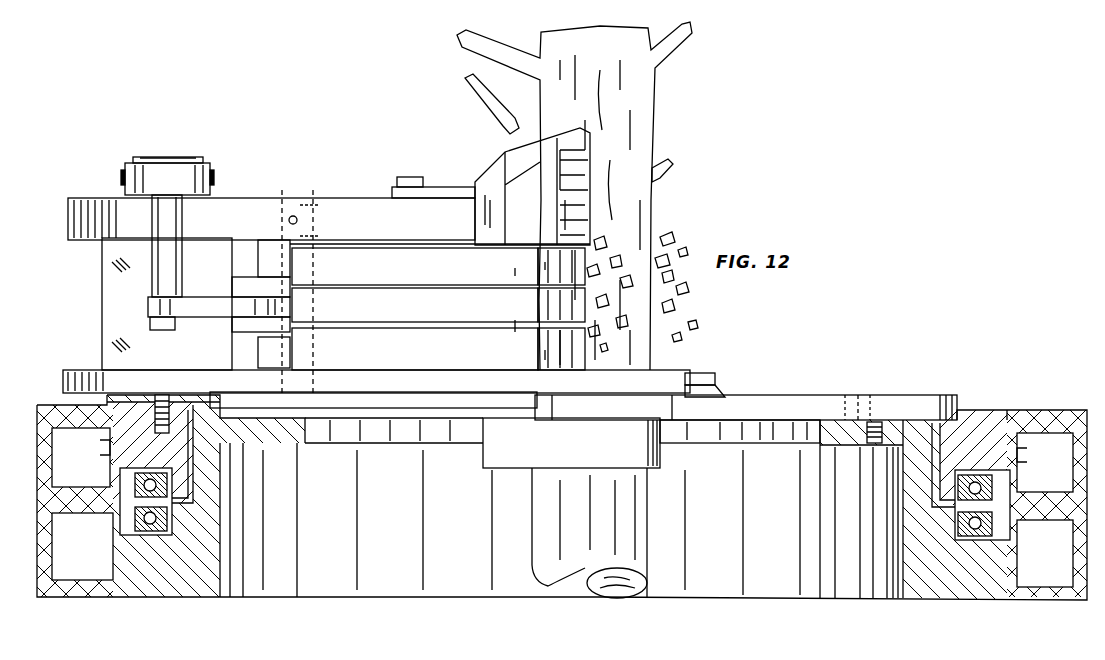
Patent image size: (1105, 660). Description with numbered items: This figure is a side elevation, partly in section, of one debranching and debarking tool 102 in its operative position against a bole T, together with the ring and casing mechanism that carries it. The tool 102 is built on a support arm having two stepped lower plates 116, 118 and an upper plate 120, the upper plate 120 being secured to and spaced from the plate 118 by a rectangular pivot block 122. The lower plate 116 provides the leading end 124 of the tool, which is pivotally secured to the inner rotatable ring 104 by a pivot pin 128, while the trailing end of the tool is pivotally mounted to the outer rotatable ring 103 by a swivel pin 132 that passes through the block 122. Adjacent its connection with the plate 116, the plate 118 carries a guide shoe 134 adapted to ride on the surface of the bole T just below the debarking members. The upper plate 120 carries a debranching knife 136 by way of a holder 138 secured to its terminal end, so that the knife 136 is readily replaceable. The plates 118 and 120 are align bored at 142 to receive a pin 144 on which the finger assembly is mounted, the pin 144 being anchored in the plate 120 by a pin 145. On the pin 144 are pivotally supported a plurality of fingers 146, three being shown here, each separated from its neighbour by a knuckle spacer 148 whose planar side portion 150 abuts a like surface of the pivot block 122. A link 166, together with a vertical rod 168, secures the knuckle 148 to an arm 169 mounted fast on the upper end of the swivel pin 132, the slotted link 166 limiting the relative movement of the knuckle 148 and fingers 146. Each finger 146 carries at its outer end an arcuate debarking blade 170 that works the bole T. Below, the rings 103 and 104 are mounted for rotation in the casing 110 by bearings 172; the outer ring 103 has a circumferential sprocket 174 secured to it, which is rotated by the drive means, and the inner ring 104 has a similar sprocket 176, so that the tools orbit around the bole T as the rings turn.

The debranching and debarking tool 102 is at (398, 152).
The outer rotatable ring 103 is at (198, 400).
The inner rotatable ring 104 is at (218, 532).
The casing 110 is at (50, 415).
The lower plate 116 is at (732, 400).
The lower plate 118 is at (470, 377).
The upper plate 120 is at (340, 198).
The pivot block 122 is at (104, 258).
The leading end 124 is at (917, 398).
The pivot pin 128 is at (856, 398).
The swivel pin 132 is at (158, 160).
The guide shoe 134 is at (662, 452).
The debranching knife 136 is at (532, 186).
The holder 138 is at (433, 177).
The aligned bore 142 is at (327, 234).
The pin 144 is at (318, 385).
The pin 145 is at (306, 216).
The finger 146 is at (262, 265).
The knuckle spacer 148 is at (240, 292).
The planar side portion 150 is at (232, 330).
The link 166 is at (225, 314).
The vertical rod 168 is at (152, 288).
The arm 169 is at (170, 162).
The debarking blade 170 is at (472, 270).
The bearing 172 is at (140, 485).
The sprocket 174 is at (108, 447).
The sprocket 176 is at (108, 557).
The bole T is at (648, 100).